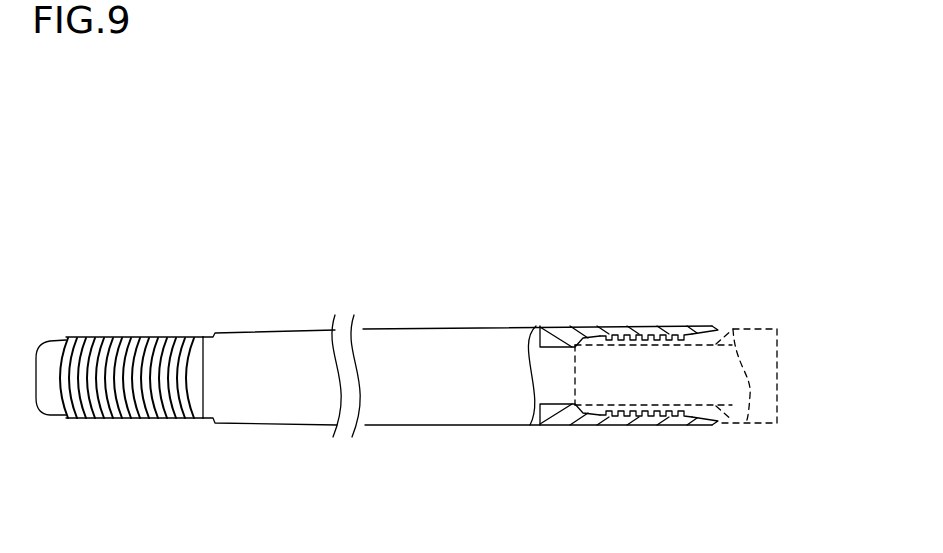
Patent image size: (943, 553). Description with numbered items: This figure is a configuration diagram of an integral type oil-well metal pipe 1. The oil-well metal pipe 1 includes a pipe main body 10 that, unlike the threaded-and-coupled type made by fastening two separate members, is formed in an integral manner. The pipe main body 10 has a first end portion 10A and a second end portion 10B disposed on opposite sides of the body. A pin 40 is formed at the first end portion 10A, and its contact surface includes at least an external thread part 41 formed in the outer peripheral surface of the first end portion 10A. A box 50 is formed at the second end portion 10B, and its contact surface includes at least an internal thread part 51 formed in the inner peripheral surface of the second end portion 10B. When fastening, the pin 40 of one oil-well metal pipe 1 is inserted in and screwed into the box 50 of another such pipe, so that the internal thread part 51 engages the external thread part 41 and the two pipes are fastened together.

The oil-well metal pipe 1 is at (410, 98).
The pipe main body 10 is at (715, 212).
The first end portion 10A is at (131, 323).
The second end portion 10B is at (655, 298).
The pin 40 is at (107, 421).
The external thread part 41 is at (167, 420).
The box 50 is at (639, 430).
The internal thread part 51 is at (652, 412).